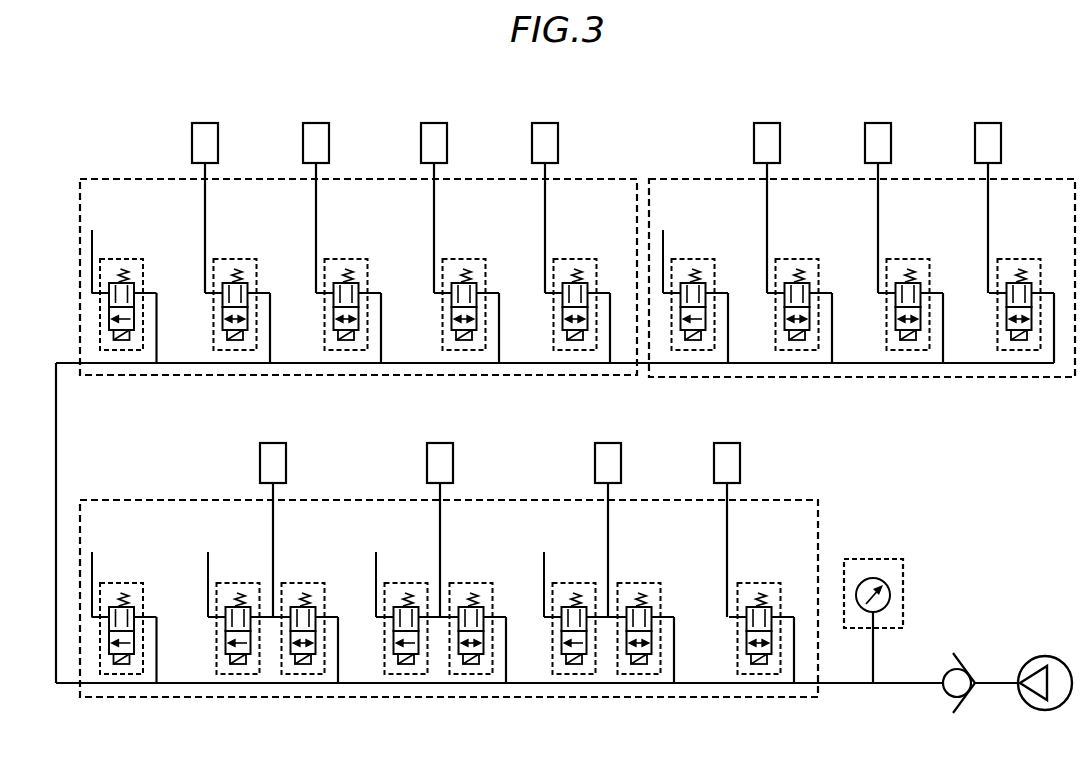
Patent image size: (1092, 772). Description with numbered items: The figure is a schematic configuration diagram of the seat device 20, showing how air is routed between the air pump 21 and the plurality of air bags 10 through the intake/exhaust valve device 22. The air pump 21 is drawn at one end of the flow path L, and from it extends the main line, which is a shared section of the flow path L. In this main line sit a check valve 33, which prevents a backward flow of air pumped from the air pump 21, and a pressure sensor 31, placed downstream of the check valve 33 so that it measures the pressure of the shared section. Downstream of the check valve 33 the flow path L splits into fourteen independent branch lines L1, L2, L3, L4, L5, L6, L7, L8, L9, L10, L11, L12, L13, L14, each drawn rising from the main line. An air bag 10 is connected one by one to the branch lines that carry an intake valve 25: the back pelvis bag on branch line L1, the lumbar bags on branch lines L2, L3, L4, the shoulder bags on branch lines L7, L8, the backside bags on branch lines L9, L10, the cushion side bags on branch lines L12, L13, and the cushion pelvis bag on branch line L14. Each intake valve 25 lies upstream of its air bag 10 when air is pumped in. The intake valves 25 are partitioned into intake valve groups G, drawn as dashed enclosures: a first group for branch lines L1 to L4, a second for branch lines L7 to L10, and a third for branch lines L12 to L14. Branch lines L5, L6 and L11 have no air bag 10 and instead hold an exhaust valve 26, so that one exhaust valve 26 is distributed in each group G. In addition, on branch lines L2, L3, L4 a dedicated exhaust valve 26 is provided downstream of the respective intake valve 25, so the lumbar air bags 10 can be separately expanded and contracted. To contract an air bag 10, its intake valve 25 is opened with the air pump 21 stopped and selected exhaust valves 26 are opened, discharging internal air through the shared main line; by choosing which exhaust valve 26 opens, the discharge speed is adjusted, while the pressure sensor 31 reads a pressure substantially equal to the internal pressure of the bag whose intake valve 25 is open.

The seat device 20 is at (130, 114).
The intake/exhaust valve device 22 is at (112, 704).
The air bags 10 is at (205, 123).
The intake valve group G is at (105, 179).
The intake valves 25 is at (232, 259).
The exhaust valves 26 is at (118, 259).
The flow path L is at (850, 686).
The branch line L1 is at (794, 617).
The branch line L2 is at (674, 617).
The branch line L3 is at (506, 617).
The branch line L4 is at (338, 617).
The branch line L5 is at (156, 617).
The branch line L6 is at (156, 293).
The branch line L7 is at (270, 293).
The branch line L8 is at (381, 293).
The branch line L9 is at (499, 293).
The branch line L10 is at (610, 293).
The branch line L11 is at (728, 293).
The branch line L12 is at (832, 293).
The branch line L13 is at (943, 293).
The branch line L14 is at (1054, 293).
The pressure sensor 31 is at (888, 559).
The check valve 33 is at (957, 651).
The air pump 21 is at (1045, 656).